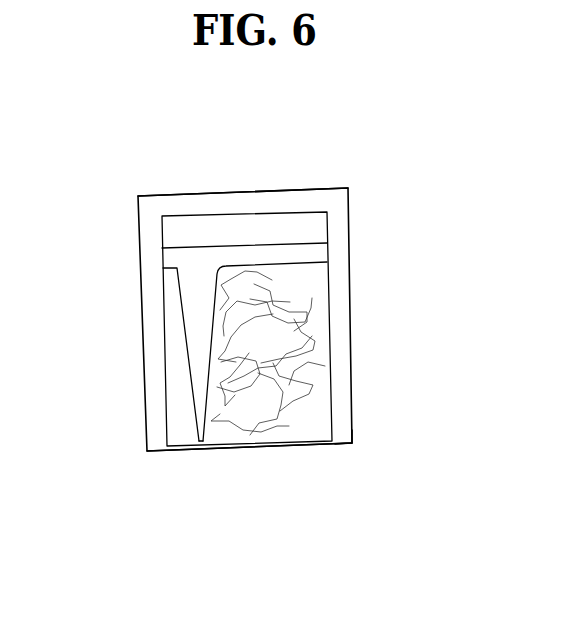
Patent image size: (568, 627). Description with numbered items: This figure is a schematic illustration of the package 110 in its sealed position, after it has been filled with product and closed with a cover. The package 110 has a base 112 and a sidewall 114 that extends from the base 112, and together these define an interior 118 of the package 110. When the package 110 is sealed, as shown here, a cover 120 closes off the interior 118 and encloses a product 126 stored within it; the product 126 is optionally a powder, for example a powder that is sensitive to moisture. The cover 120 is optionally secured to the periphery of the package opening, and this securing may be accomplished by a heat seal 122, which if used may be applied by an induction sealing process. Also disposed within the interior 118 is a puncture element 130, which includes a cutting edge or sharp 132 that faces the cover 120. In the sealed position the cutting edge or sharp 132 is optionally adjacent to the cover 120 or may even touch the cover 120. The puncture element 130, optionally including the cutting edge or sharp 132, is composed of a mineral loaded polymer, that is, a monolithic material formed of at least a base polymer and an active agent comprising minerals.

The package 110 is at (123, 185).
The base 112 is at (238, 194).
The sidewall 114 is at (338, 308).
The interior 118 is at (295, 365).
The cover 120 is at (278, 449).
The heat seal 122 is at (351, 445).
The product 126 is at (288, 345).
The puncture element 130 is at (202, 328).
The cutting edge or sharp 132 is at (194, 443).